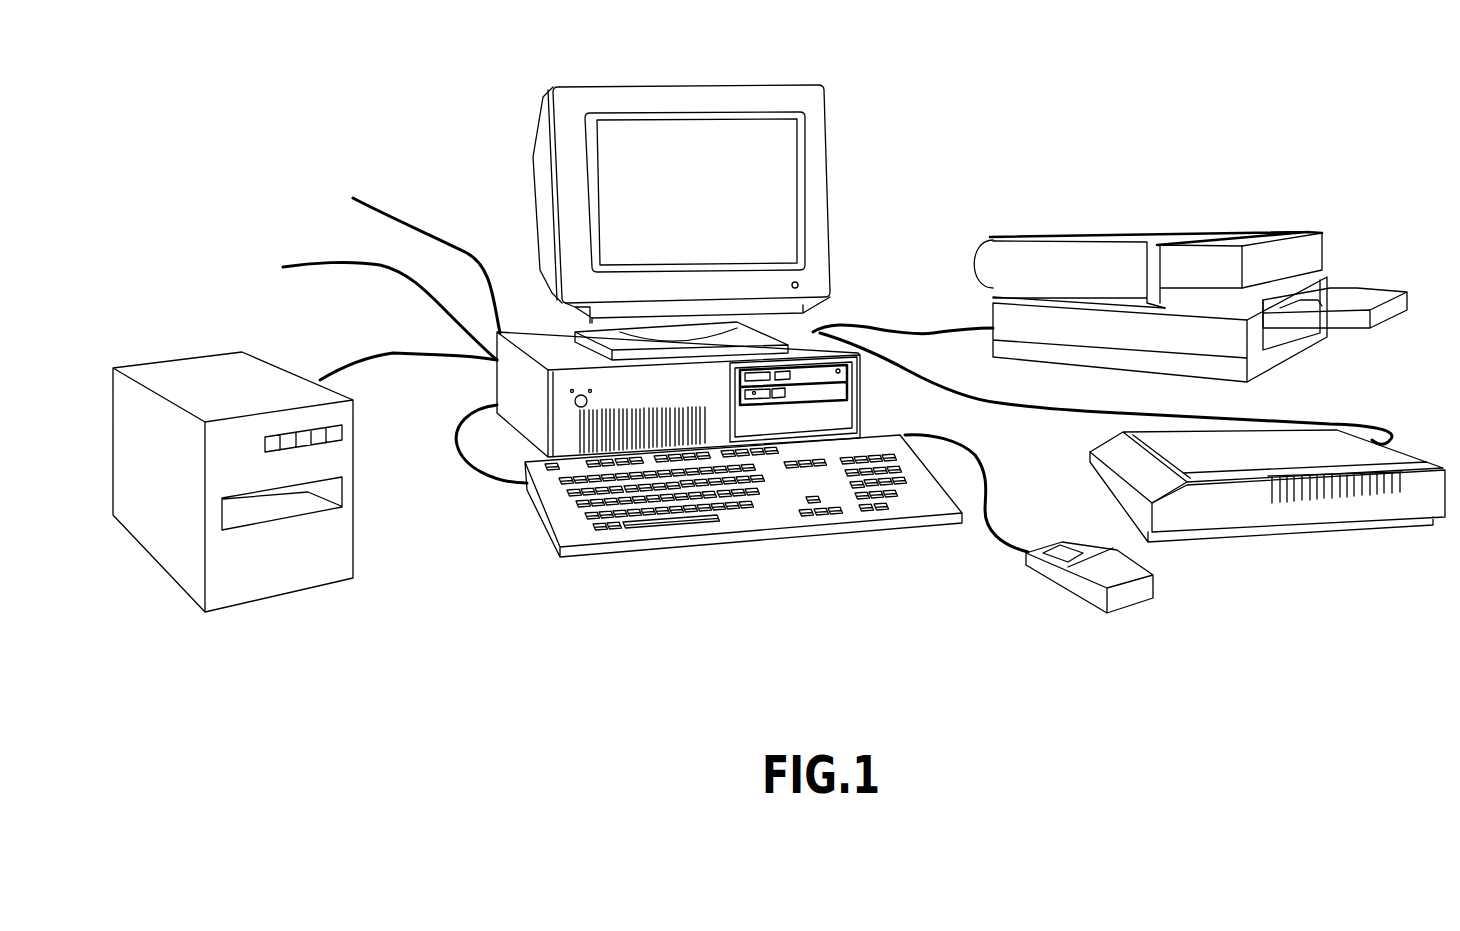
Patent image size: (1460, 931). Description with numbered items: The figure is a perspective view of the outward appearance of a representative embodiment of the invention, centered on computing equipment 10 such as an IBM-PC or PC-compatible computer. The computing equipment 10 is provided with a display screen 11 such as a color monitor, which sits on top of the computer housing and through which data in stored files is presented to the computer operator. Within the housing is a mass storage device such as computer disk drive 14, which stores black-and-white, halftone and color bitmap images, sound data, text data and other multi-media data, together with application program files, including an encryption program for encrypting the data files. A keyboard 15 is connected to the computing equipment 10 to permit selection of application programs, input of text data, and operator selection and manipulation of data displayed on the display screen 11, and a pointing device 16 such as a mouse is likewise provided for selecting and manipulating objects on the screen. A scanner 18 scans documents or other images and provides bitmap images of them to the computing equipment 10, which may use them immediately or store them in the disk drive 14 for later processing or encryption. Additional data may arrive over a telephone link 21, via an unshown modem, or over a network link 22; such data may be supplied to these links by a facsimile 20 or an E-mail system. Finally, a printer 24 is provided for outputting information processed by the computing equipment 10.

The computing equipment 10 is at (919, 165).
The display screen 11 is at (722, 86).
The computer disk drive 14 is at (822, 396).
The keyboard 15 is at (625, 528).
The pointing device 16 is at (1123, 605).
The scanner 18 is at (1303, 533).
The facsimile 20 is at (177, 587).
The telephone link 21 is at (332, 267).
The network link 22 is at (460, 248).
The printer 24 is at (1108, 226).